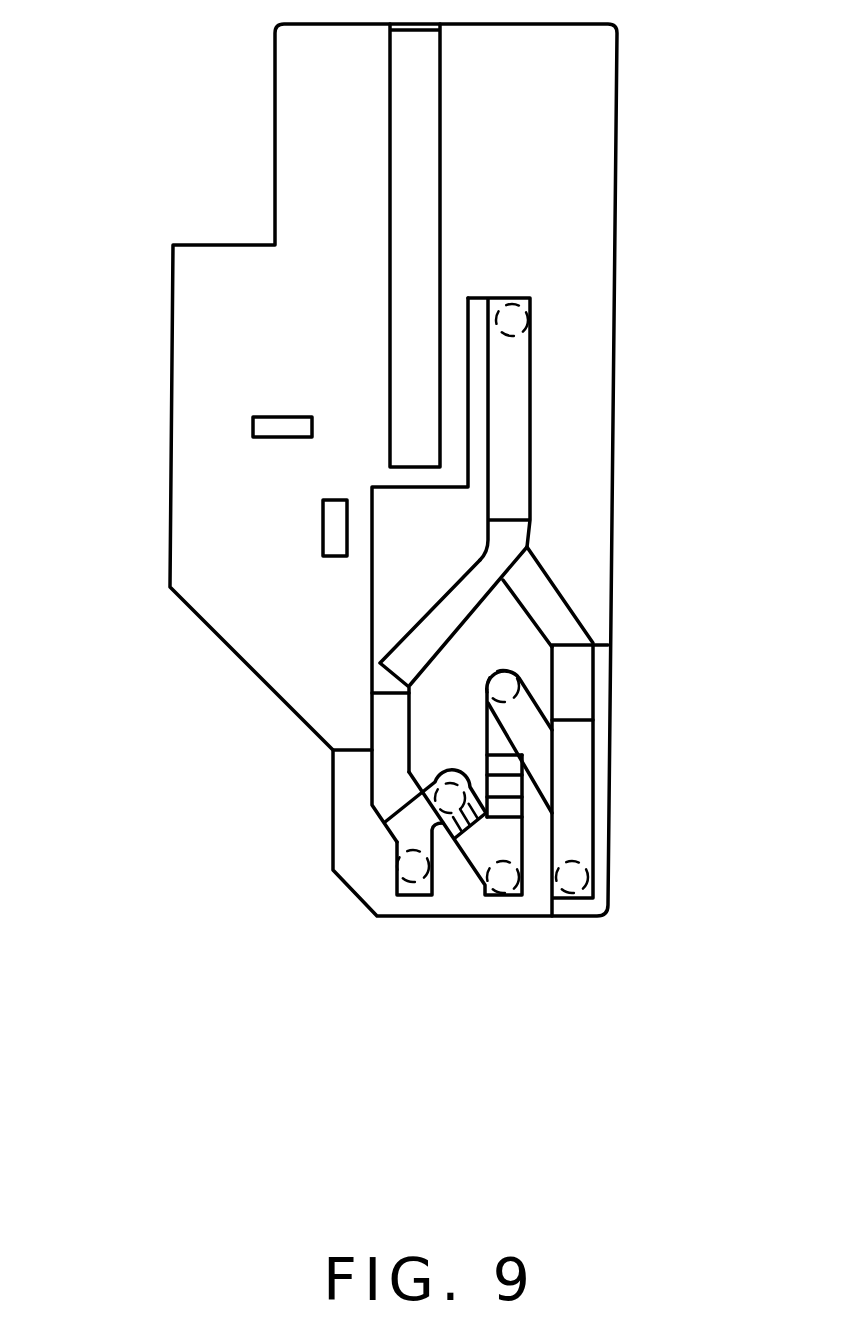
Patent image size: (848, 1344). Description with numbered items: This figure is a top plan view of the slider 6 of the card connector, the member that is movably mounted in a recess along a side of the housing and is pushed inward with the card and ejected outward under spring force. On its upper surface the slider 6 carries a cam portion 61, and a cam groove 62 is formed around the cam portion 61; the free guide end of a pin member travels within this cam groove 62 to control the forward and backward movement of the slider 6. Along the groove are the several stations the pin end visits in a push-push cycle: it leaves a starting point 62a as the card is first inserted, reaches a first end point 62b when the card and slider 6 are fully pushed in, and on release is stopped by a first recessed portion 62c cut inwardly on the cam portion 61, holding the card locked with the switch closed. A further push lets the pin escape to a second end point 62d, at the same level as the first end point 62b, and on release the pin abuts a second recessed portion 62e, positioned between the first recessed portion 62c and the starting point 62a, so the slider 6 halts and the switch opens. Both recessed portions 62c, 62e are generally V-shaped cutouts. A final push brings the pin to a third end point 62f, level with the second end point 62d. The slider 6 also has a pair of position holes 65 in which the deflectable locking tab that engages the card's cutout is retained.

The slider 6 is at (206, 116).
The cam portion 61 is at (442, 695).
The cam groove 62 is at (440, 622).
The starting point 62a is at (522, 316).
The first end point 62b is at (413, 870).
The first recessed portion 62c is at (452, 800).
The second end point 62d is at (505, 878).
The second recessed portion 62e is at (507, 687).
The third end point 62f is at (570, 874).
The position holes 65 is at (280, 427).